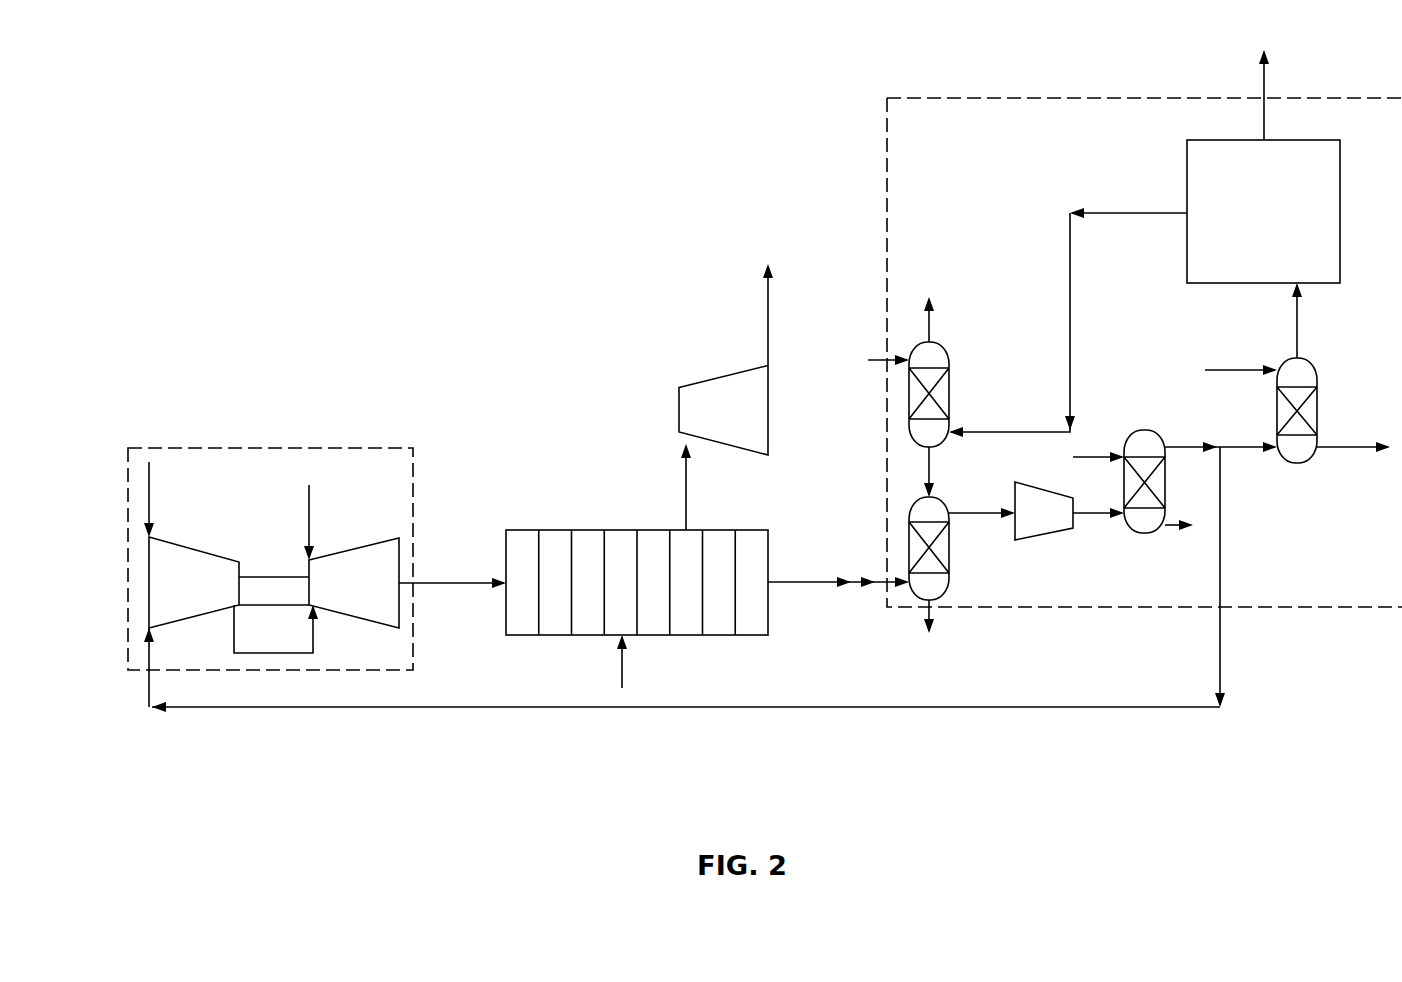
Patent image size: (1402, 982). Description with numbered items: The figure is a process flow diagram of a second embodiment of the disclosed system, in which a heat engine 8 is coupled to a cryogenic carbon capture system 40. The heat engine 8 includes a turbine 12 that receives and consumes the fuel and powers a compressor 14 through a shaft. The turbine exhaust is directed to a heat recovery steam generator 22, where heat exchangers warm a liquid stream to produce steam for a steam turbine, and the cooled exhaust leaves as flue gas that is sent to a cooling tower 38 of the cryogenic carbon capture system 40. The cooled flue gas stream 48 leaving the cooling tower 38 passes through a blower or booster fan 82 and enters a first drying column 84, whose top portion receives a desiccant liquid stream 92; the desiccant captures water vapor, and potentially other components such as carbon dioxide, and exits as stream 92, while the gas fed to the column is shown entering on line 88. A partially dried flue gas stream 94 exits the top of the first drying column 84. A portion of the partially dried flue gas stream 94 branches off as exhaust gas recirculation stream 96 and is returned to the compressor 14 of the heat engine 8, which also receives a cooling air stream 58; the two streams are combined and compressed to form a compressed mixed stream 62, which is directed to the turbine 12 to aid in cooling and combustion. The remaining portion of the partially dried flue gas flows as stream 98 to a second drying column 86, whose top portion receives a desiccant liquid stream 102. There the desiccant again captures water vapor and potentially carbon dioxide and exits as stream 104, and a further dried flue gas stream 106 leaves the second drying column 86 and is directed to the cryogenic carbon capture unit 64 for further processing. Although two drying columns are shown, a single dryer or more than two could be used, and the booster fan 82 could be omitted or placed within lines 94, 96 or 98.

The heat engine 8 is at (175, 447).
The turbine 12 is at (368, 537).
The compressor 14 is at (200, 547).
The heat recovery steam generator 22 is at (566, 530).
The cooling tower 38 is at (913, 497).
The cryogenic carbon capture system 40 is at (952, 96).
The cooled flue gas stream 48 is at (983, 511).
The cooling air stream 58 is at (147, 497).
The compressed mixed stream 62 is at (273, 655).
The cryogenic carbon capture unit 64 is at (1245, 140).
The blower or booster fan 82 is at (1045, 534).
The first drying column 84 is at (1147, 430).
The second drying column 86 is at (1318, 378).
The inlet stream 88 is at (1098, 455).
The desiccant liquid stream 92 is at (1172, 530).
The partially dried flue gas stream 94 is at (1197, 447).
The exhaust gas recirculation stream 96 is at (1222, 592).
The remaining portion stream 98 is at (1243, 450).
The desiccant liquid stream 102 is at (1240, 369).
The desiccant exit stream 104 is at (1338, 450).
The further dried flue gas stream 106 is at (1300, 333).